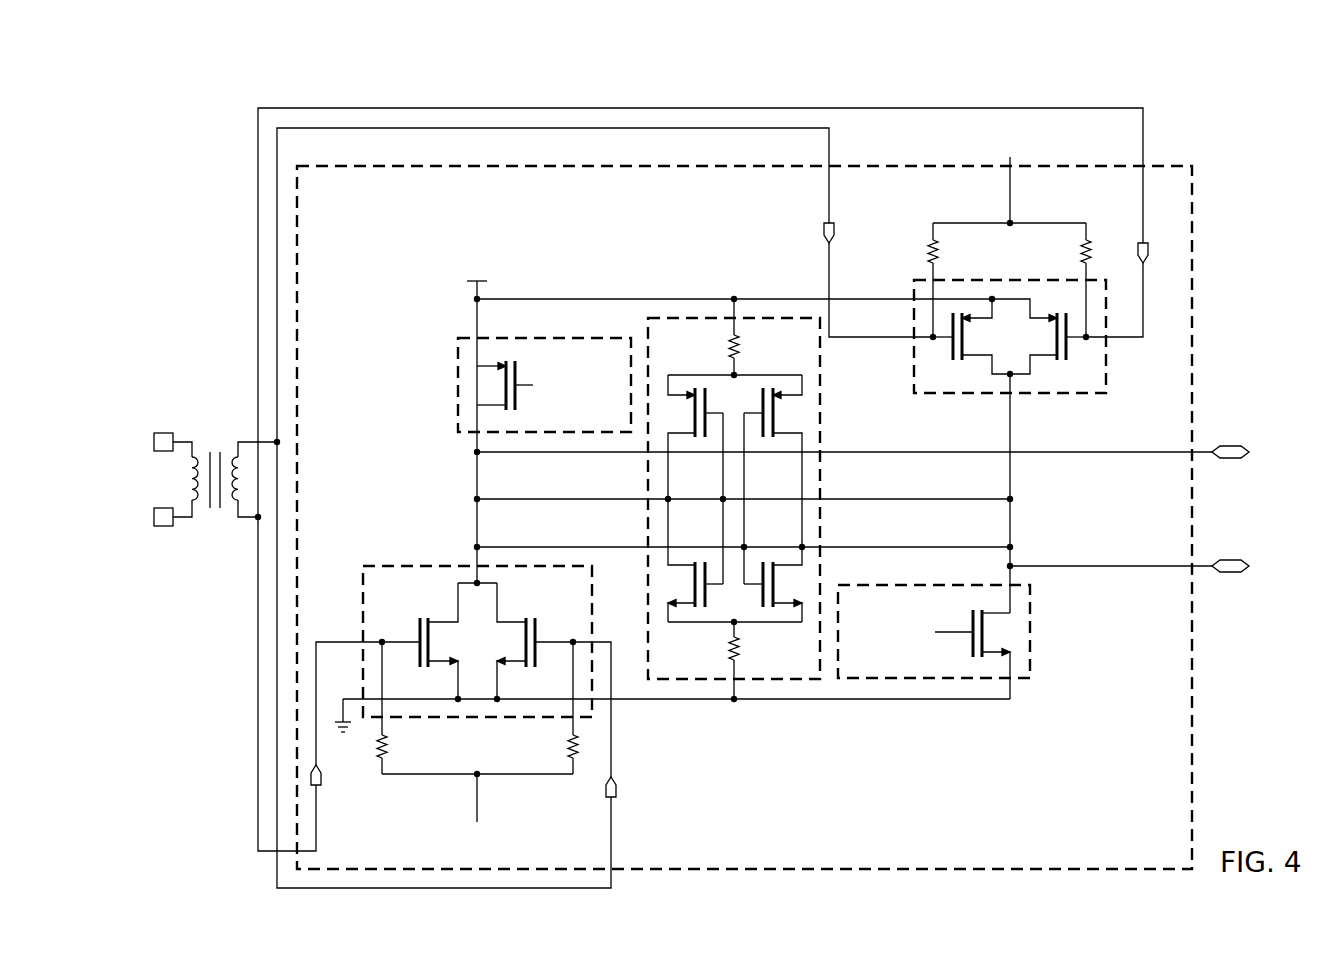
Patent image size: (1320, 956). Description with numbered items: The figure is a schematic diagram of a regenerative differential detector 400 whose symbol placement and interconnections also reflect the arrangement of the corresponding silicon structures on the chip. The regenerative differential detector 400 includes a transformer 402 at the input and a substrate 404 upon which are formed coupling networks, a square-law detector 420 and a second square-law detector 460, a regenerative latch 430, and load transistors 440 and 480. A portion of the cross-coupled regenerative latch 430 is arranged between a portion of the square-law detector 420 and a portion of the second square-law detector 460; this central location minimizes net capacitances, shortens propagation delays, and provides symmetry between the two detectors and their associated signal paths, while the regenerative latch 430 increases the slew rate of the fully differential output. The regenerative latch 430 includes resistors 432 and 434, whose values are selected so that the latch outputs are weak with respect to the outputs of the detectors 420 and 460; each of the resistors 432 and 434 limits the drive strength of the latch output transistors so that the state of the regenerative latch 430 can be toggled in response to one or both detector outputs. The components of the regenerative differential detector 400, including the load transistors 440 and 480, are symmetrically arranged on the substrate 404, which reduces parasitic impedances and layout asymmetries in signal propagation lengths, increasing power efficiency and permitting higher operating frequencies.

The regenerative differential detector 400 is at (781, 498).
The transformer 402 is at (196, 374).
The substrate 404 is at (1200, 372).
The square-law detector 420 is at (1113, 379).
The regenerative latch 430 is at (771, 499).
The resistor 432 is at (730, 345).
The resistor 434 is at (730, 651).
The load transistor 440 is at (453, 359).
The second square-law detector 460 is at (427, 564).
The load transistor 480 is at (1038, 660).